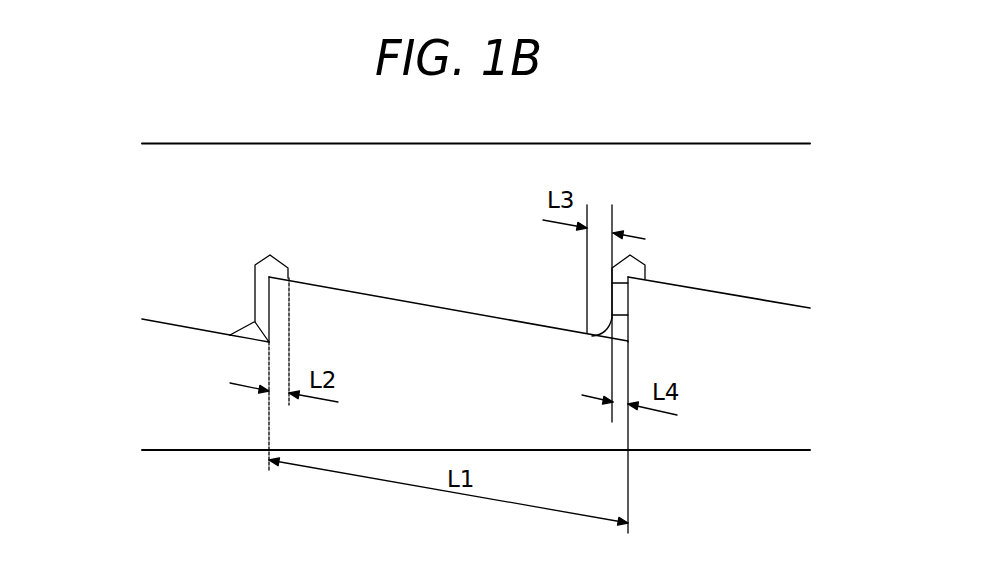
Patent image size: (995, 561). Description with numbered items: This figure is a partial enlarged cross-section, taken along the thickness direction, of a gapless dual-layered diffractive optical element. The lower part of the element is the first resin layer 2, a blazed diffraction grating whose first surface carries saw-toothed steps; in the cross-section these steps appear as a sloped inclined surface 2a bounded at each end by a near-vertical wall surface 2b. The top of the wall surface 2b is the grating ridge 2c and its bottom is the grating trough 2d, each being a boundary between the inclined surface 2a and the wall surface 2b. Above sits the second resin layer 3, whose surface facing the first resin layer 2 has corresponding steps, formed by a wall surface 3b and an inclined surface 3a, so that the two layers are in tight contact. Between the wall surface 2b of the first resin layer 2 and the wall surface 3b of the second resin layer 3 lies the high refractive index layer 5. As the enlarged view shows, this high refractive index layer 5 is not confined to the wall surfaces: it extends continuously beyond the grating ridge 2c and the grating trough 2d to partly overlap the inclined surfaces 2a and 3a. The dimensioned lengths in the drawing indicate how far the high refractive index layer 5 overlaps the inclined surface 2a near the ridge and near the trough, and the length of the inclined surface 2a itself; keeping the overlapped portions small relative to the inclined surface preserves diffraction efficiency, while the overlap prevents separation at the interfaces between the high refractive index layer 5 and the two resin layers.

The first resin layer 2 is at (697, 437).
The second resin layer 3 is at (627, 153).
The inclined surface 2a is at (391, 296).
The inclined surface 3a is at (407, 303).
The wall surface 2b is at (612, 315).
The wall surface 3b is at (613, 283).
The grating ridge 2c is at (273, 257).
The grating trough 2d is at (254, 322).
The high refractive index layer 5 is at (257, 267).